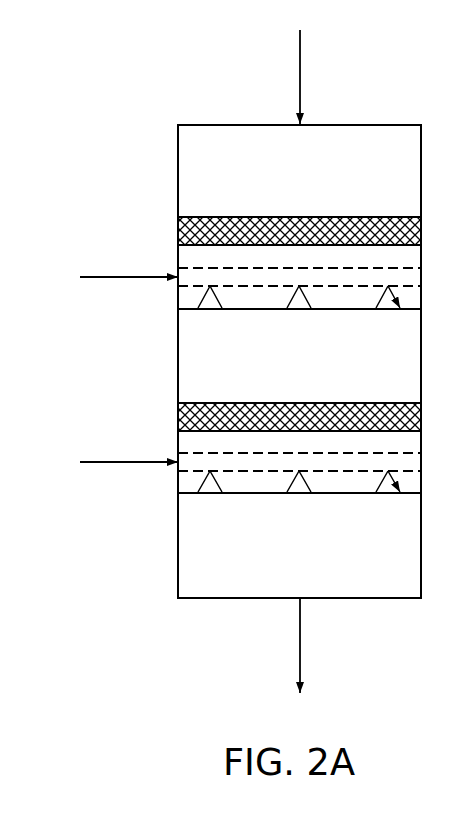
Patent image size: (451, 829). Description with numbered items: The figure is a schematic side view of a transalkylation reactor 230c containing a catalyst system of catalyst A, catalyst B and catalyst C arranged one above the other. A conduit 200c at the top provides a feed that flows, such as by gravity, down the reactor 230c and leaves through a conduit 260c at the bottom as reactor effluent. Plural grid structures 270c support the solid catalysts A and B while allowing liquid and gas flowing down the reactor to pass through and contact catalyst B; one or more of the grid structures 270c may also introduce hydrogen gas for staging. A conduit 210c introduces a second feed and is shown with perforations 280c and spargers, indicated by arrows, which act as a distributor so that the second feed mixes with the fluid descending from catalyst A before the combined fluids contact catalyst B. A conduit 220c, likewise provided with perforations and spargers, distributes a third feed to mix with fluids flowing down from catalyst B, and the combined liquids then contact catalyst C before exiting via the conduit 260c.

The conduit 200c is at (298, 50).
The reactor 230c is at (163, 168).
The grid structures 270c is at (178, 225).
The conduit 210c is at (125, 277).
The conduit 220c is at (125, 462).
The perforations 280c is at (183, 287).
The conduit 260c is at (298, 634).